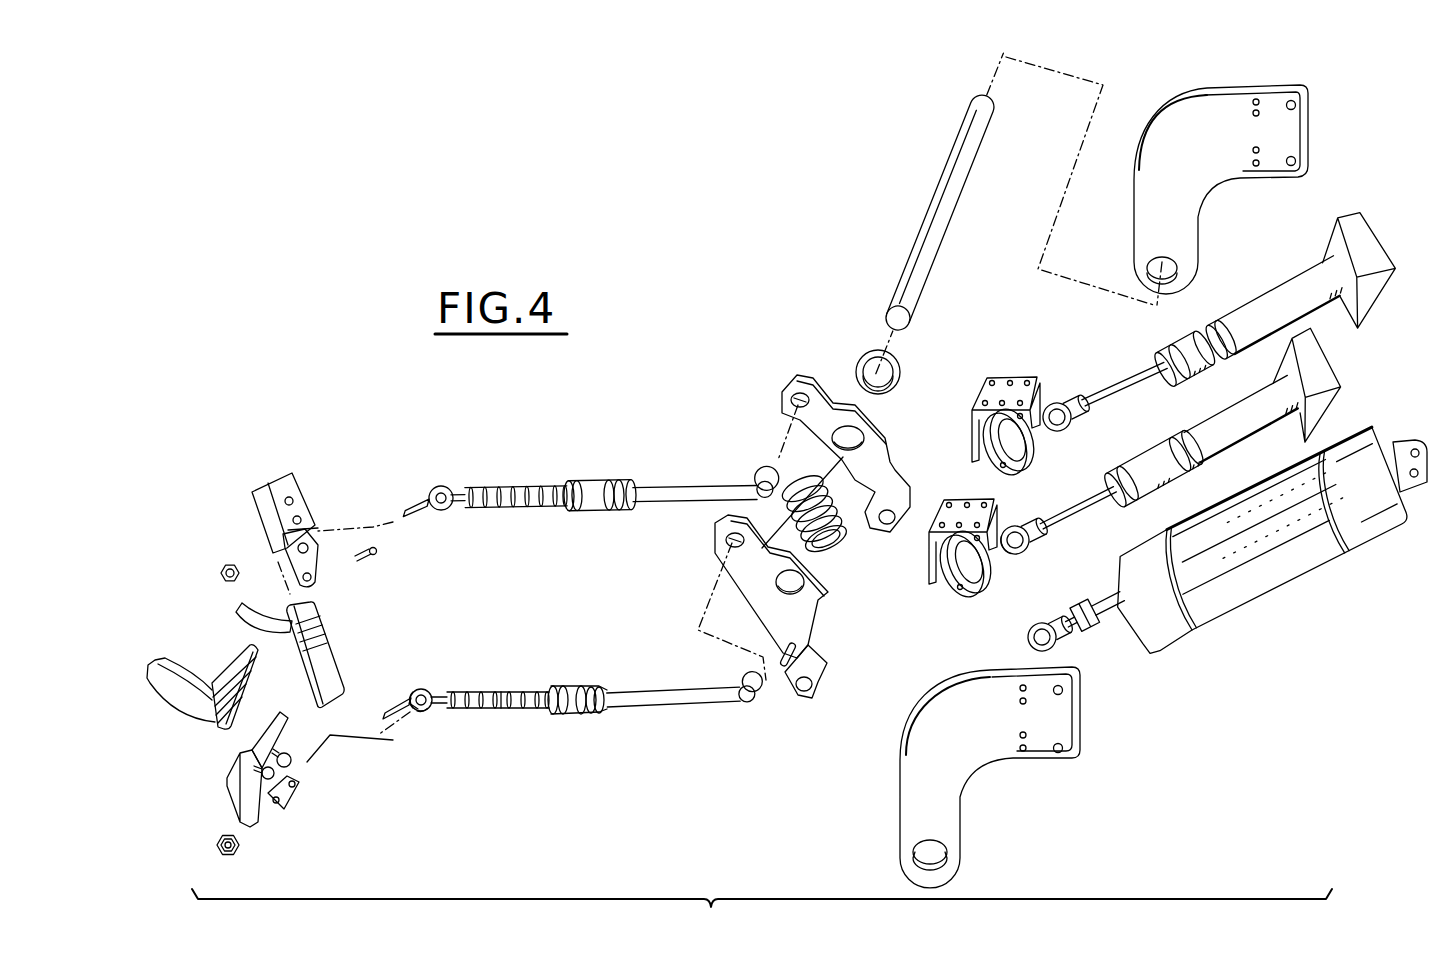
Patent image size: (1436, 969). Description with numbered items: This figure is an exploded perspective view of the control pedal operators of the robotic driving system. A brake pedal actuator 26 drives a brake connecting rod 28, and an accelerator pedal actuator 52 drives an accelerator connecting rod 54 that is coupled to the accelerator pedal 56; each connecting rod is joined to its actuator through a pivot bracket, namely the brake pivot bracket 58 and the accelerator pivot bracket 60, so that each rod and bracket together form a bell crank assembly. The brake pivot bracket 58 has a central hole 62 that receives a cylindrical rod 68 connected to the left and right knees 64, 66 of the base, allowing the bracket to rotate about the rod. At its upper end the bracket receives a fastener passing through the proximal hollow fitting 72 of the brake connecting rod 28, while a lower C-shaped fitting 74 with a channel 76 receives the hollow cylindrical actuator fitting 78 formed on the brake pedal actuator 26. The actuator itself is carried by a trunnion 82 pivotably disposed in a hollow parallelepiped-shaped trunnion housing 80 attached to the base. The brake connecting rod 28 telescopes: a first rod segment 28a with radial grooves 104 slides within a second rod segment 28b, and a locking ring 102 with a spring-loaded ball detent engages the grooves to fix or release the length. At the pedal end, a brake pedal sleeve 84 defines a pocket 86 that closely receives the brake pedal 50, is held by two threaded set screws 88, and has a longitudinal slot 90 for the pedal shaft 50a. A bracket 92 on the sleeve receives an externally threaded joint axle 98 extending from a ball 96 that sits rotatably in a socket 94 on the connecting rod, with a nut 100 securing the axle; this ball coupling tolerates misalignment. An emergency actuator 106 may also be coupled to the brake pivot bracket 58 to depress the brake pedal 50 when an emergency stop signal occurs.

The brake pedal actuator 26 is at (1171, 464).
The brake connecting rod 28 is at (574, 689).
The first rod segment 28a is at (513, 680).
The second rod segment 28b is at (665, 690).
The brake pedal 50 is at (257, 695).
The shaft 50a is at (180, 668).
The accelerator pedal actuator 52 is at (1158, 352).
The accelerator connecting rod 54 is at (645, 490).
The accelerator pedal 56 is at (257, 597).
The brake pivot bracket 58 is at (794, 618).
The accelerator pivot bracket 60 is at (782, 385).
The central hole 62 is at (795, 588).
The left knee 64 is at (977, 778).
The right knee 66 is at (1173, 102).
The cylindrical rod 68 is at (953, 193).
The proximal hollow fitting 72 is at (765, 693).
The C-shaped fitting 74 is at (817, 647).
The channel 76 is at (806, 694).
The actuator fitting 78 is at (1033, 542).
The trunnion housing 80 is at (948, 588).
The trunnion 82 is at (988, 590).
The brake pedal sleeve 84 is at (240, 798).
The pocket 86 is at (233, 768).
The threaded set screws 88 is at (300, 773).
The longitudinal slot 90 is at (250, 752).
The bracket 92 is at (283, 810).
The socket 94 is at (423, 688).
The ball 96 is at (413, 713).
The joint axle 98 is at (392, 712).
The nut 100 is at (240, 843).
The locking ring 102 is at (577, 682).
The radial grooves 104 is at (520, 707).
The emergency actuator 106 is at (1212, 617).